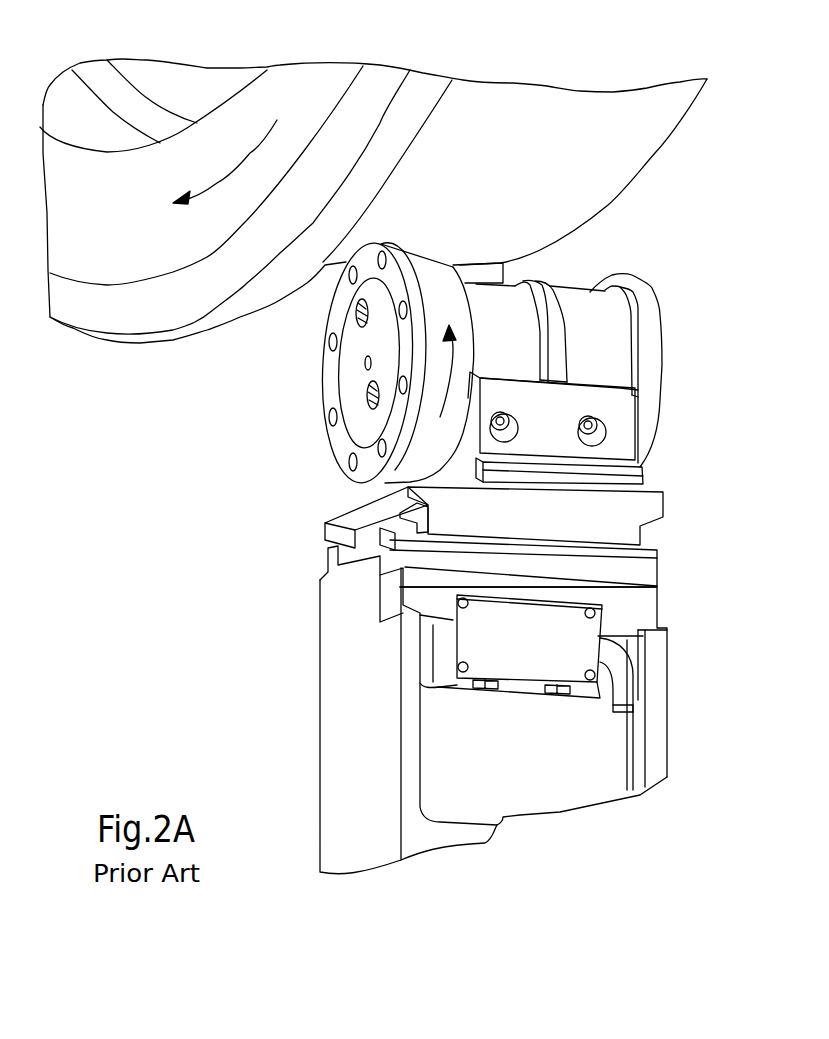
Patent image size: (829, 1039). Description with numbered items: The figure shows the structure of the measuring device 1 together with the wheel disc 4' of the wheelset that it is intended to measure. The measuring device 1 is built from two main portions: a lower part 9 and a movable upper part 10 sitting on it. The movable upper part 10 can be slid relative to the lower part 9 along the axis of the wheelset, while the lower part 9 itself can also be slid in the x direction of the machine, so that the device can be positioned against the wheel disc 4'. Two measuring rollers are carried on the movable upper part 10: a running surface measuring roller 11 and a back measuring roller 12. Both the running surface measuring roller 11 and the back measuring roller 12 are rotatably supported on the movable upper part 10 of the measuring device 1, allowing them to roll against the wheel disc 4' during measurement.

The measuring device 1 is at (167, 537).
The wheel disc 4' is at (380, 201).
The lower part 9 is at (695, 537).
The movable upper part 10 is at (695, 278).
The running surface measuring roller 11 is at (437, 287).
The back measuring roller 12 is at (637, 290).